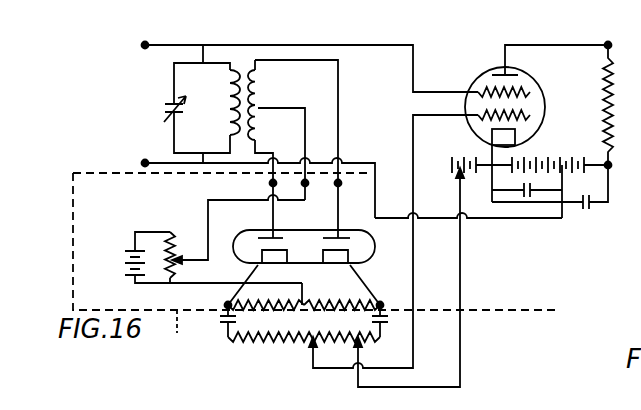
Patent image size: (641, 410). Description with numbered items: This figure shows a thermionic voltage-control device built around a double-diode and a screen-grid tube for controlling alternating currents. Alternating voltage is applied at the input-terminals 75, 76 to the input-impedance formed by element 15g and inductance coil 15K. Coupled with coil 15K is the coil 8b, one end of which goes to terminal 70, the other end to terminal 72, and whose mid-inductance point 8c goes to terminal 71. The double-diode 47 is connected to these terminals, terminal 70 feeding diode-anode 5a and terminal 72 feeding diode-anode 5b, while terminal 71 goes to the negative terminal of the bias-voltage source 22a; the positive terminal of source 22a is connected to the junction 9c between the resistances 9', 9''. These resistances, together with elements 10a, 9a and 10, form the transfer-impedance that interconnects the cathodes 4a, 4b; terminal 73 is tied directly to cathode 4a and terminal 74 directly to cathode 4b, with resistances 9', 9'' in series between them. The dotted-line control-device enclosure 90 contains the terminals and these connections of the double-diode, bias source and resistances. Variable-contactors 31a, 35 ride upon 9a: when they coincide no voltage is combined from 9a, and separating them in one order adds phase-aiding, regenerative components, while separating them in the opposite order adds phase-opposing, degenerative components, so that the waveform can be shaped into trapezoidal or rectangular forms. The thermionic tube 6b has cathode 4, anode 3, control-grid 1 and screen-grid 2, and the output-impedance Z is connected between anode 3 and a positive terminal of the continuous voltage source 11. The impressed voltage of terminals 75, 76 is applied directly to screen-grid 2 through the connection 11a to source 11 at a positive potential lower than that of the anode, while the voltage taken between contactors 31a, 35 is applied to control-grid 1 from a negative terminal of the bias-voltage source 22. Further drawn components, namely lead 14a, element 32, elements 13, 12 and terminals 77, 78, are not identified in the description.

The input-terminal 75 is at (142, 46).
The input-terminal 76 is at (142, 164).
The inductance coil 15K is at (226, 94).
The input-impedance element 15g is at (162, 108).
The coil 8b is at (262, 78).
The mid-inductance point 8c is at (263, 108).
The terminal 70 is at (270, 184).
The terminal 71 is at (306, 186).
The terminal 72 is at (340, 184).
The bias lead 14a is at (204, 206).
The control-device enclosure 90 is at (316, 264).
The potentiometer 32 is at (174, 232).
The bias-voltage source 22a is at (124, 264).
The junction 9c is at (305, 290).
The double-diode 47 is at (375, 243).
The diode-anode 5a is at (266, 234).
The diode-anode 5b is at (337, 236).
The cathode 4a is at (248, 270).
The cathode 4b is at (358, 270).
The resistance 9' is at (266, 314).
The resistance 9'' is at (340, 314).
The terminal 73 is at (222, 304).
The terminal 74 is at (388, 296).
The transfer-impedance element 10 is at (218, 322).
The transfer-impedance element 10a is at (372, 319).
The transfer-impedance resistance 9a is at (268, 342).
The variable-contactor 31a is at (414, 362).
The variable-contactor 35 is at (462, 298).
The anode 3 is at (496, 72).
The screen-grid 2 is at (478, 92).
The control-grid 1 is at (478, 120).
The thermionic tube 6b is at (516, 136).
The bias-voltage source 22 is at (450, 165).
The cathode 4 is at (520, 146).
The continuous voltage source 11 is at (566, 163).
The capacitor 13 is at (522, 188).
The capacitor 12 is at (590, 206).
The connection 11a is at (562, 220).
The output-impedance Z is at (602, 96).
The terminal 77 is at (612, 45).
The terminal 78 is at (612, 165).